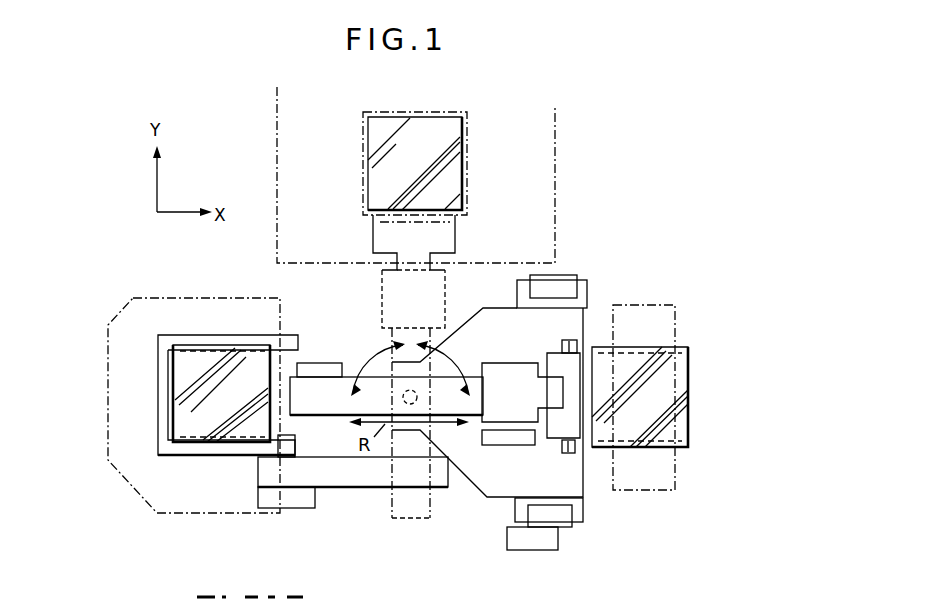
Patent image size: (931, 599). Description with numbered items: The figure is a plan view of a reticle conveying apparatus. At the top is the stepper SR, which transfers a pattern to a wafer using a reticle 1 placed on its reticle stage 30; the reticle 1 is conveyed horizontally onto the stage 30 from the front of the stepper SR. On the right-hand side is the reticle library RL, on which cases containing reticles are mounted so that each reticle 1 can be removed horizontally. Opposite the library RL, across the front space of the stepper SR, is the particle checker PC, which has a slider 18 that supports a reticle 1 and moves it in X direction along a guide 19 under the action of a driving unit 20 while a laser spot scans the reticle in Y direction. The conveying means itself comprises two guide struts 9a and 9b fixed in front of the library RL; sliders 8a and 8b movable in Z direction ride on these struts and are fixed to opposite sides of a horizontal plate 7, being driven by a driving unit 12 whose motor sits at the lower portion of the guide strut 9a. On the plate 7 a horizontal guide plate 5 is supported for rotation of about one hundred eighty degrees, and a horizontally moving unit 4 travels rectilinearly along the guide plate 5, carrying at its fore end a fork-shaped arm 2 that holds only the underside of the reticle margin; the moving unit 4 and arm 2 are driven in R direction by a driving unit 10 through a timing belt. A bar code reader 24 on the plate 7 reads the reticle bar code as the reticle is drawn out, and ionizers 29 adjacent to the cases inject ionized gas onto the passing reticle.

The reticle 1 is at (374, 187).
The fork-shaped arm 2 is at (456, 251).
The horizontally moving unit 4 is at (507, 372).
The horizontal guide plate 5 is at (302, 405).
The horizontal plate 7 is at (490, 486).
The slider 8a is at (583, 515).
The slider 8b is at (588, 290).
The guide strut 9a is at (565, 526).
The guide strut 9b is at (559, 275).
The driving unit 10 is at (322, 363).
The driving unit 12 is at (531, 540).
The slider 18 is at (178, 453).
The guide 19 is at (355, 483).
The driving unit 20 is at (300, 500).
The bar code reader 24 is at (488, 443).
The ionizer 29 is at (577, 460).
The reticle stage 30 is at (463, 197).
The stepper SR is at (557, 158).
The particle checker PC is at (123, 300).
The reticle library RL is at (650, 302).